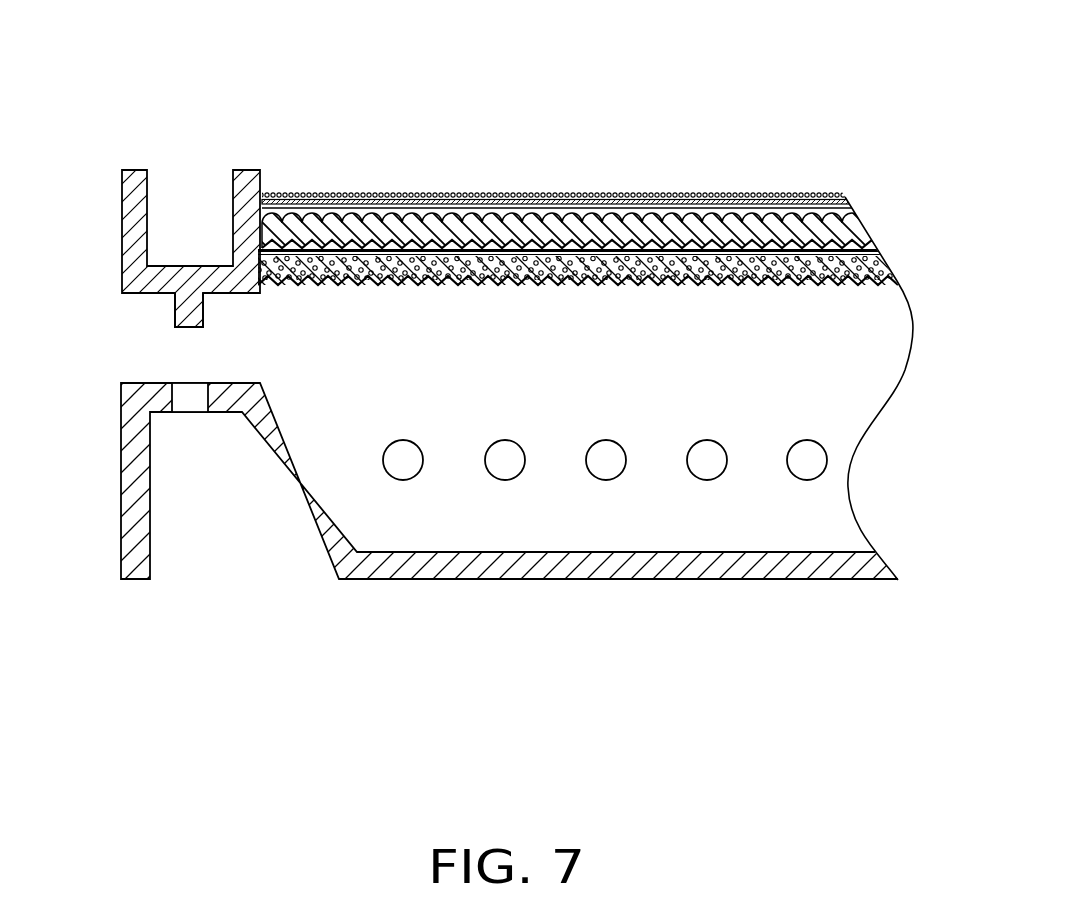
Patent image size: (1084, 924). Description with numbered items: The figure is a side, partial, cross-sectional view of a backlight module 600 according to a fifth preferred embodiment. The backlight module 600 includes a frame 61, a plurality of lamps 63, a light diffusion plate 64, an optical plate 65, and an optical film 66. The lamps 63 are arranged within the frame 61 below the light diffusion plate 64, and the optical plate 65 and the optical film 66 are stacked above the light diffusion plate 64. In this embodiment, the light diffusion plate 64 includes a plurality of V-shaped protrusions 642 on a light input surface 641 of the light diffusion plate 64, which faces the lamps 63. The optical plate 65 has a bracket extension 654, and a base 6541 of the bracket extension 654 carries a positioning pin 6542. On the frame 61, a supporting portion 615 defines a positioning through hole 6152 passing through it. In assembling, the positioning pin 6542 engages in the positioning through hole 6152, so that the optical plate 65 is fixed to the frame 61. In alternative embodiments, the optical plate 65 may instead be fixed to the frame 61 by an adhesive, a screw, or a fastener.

The backlight module 600 is at (559, 62).
The frame 61 is at (528, 508).
The supporting portion 615 is at (223, 387).
The positioning through hole 6152 is at (192, 402).
The lamps 63 is at (807, 460).
The light diffusion plate 64 is at (607, 316).
The light input surface 641 is at (610, 282).
The V-shaped protrusions 642 is at (783, 285).
The optical plate 65 is at (857, 232).
The optical film 66 is at (847, 203).
The bracket extension 654 is at (130, 203).
The base 6541 is at (168, 276).
The positioning pin 6542 is at (185, 313).